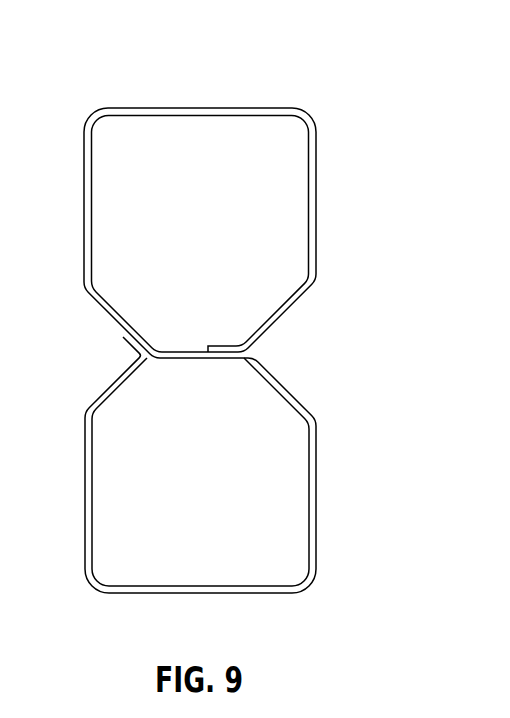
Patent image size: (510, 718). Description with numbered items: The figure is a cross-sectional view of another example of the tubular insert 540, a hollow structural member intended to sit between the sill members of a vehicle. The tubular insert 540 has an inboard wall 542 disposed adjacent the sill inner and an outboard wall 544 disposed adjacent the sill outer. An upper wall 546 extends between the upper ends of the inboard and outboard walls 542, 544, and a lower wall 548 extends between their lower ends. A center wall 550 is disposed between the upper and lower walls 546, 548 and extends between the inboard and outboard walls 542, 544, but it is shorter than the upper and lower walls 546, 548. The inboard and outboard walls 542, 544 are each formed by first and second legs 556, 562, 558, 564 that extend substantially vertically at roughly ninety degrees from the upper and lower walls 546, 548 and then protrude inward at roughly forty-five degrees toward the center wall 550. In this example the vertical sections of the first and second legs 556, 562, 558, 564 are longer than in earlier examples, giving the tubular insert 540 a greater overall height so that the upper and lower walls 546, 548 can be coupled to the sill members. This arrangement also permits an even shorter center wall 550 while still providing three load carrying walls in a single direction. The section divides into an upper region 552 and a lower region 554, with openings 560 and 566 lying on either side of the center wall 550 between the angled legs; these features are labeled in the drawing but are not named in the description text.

The tubular insert 540 is at (324, 75).
The inboard wall 542 is at (84, 190).
The outboard wall 544 is at (316, 164).
The upper wall 546 is at (215, 108).
The lower wall 548 is at (207, 593).
The center wall 550 is at (178, 358).
The upper cavity 552 is at (218, 246).
The lower cavity 554 is at (218, 508).
The first leg 556 is at (300, 310).
The second leg 558 is at (303, 397).
The right notch 560 is at (322, 369).
The first leg 562 is at (90, 309).
The second leg 564 is at (100, 393).
The left notch 566 is at (110, 367).